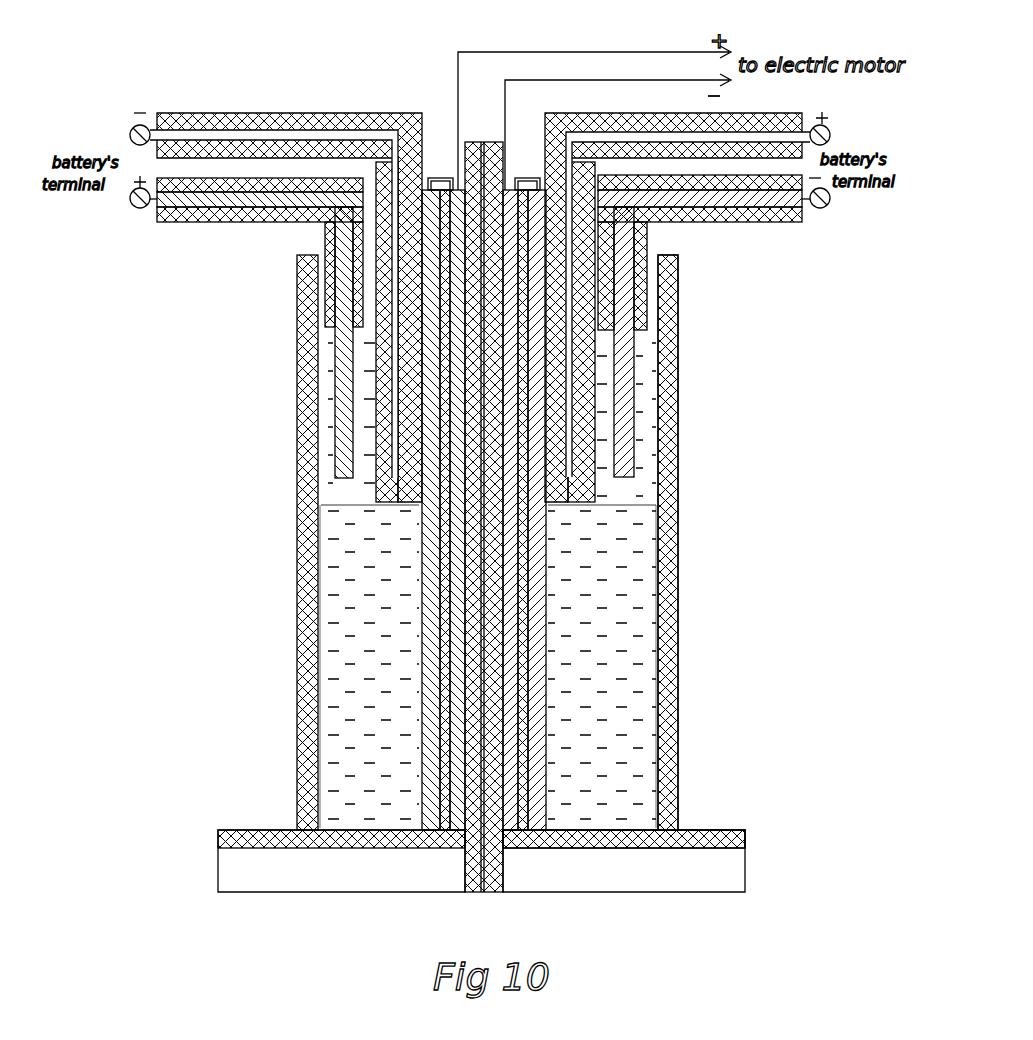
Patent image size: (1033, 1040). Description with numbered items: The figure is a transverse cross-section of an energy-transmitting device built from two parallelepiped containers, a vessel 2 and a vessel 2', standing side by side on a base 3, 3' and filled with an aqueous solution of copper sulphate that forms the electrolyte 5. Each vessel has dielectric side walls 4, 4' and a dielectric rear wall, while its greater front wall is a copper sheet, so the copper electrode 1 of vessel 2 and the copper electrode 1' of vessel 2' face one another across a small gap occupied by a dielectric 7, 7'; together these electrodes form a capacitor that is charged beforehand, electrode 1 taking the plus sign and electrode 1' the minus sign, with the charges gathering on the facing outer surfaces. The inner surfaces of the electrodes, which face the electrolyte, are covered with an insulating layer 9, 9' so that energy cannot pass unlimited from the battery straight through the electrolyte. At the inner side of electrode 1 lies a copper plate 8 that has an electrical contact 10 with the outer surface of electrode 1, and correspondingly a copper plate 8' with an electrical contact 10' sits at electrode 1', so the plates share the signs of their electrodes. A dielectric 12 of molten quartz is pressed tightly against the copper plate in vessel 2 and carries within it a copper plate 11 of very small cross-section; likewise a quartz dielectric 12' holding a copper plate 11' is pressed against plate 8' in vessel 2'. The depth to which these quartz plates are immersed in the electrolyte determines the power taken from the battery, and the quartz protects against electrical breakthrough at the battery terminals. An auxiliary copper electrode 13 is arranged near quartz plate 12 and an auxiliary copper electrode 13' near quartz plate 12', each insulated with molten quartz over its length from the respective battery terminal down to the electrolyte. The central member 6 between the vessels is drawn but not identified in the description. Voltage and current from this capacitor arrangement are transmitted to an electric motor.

The copper electrode 1 is at (326, 510).
The copper electrode 1' is at (665, 510).
The vessel 2 is at (414, 542).
The vessel 2' is at (741, 542).
The base 3 is at (447, 819).
The base (right) 3' is at (667, 795).
The side walls 4 is at (298, 513).
The electrolyte level (right) 4' is at (707, 531).
The electrolyte 5 is at (360, 555).
The central shaft 6 is at (478, 416).
The dielectric 7 is at (260, 666).
The dielectric 7' is at (672, 644).
The copper plate 8 is at (300, 510).
The copper plate 8' is at (677, 510).
The insulating layer 9 is at (306, 510).
The insulating layer (right) 9' is at (672, 510).
The electrical contact 10 is at (305, 252).
The electrical contact 10' is at (679, 252).
The copper plate 11 is at (241, 320).
The copper plate 11' is at (734, 307).
The dielectric 12 is at (254, 307).
The dielectric 12' is at (748, 296).
The auxiliary copper electrode 13 is at (284, 342).
The auxiliary copper electrode 13' is at (737, 342).